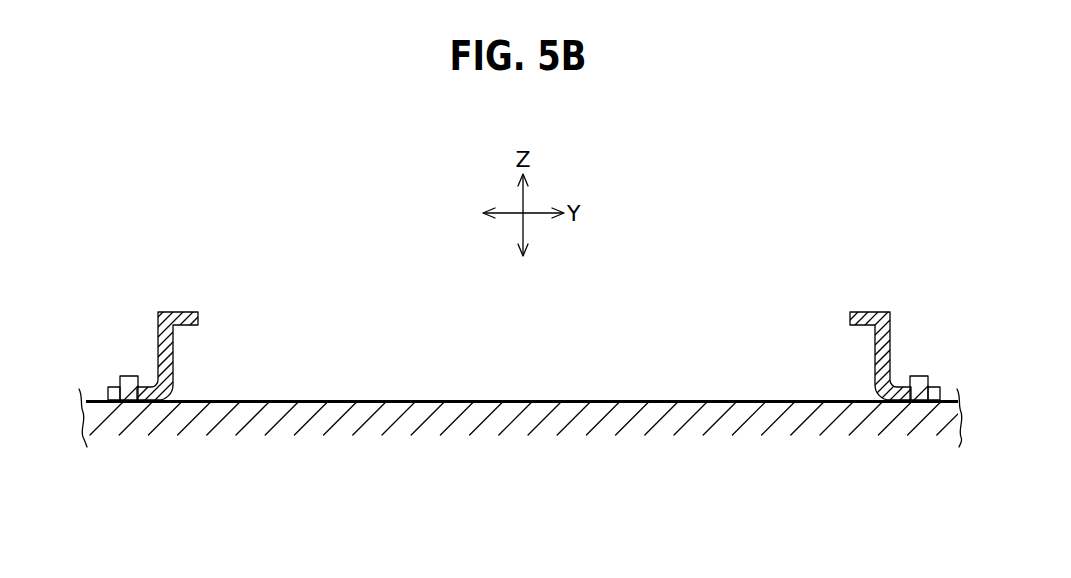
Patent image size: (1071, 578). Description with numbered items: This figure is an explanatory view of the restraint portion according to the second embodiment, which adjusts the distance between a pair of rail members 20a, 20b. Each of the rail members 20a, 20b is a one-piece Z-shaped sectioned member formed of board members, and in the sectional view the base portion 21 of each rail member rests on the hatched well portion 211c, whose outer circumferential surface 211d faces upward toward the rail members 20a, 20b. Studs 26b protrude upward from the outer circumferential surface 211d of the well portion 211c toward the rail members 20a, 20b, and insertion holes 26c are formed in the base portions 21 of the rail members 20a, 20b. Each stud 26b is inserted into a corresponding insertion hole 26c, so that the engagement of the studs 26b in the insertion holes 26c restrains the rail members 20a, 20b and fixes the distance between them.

The rail member 20a is at (890, 330).
The rail member 20b is at (158, 330).
The base portion 21 is at (114, 388).
The stud 26b is at (130, 376).
The insertion hole 26c is at (128, 401).
The well portion 211c is at (524, 440).
The outer circumferential surface 211d is at (518, 401).